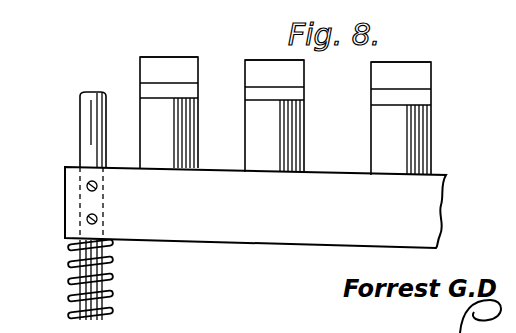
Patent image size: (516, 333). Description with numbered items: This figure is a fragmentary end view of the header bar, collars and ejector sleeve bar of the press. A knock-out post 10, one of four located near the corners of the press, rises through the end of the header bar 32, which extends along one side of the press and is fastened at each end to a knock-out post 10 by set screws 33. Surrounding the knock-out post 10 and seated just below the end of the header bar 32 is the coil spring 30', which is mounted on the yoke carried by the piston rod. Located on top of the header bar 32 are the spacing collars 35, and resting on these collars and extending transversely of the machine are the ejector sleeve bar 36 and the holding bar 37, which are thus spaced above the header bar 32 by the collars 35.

The knock-out post 10 is at (97, 113).
The coil spring 30' is at (67, 279).
The header bar 32 is at (211, 177).
The set screws 33 is at (97, 188).
The spacing collars 35 is at (167, 160).
The ejector sleeve bar 36 is at (145, 89).
The holding bar 37 is at (252, 66).